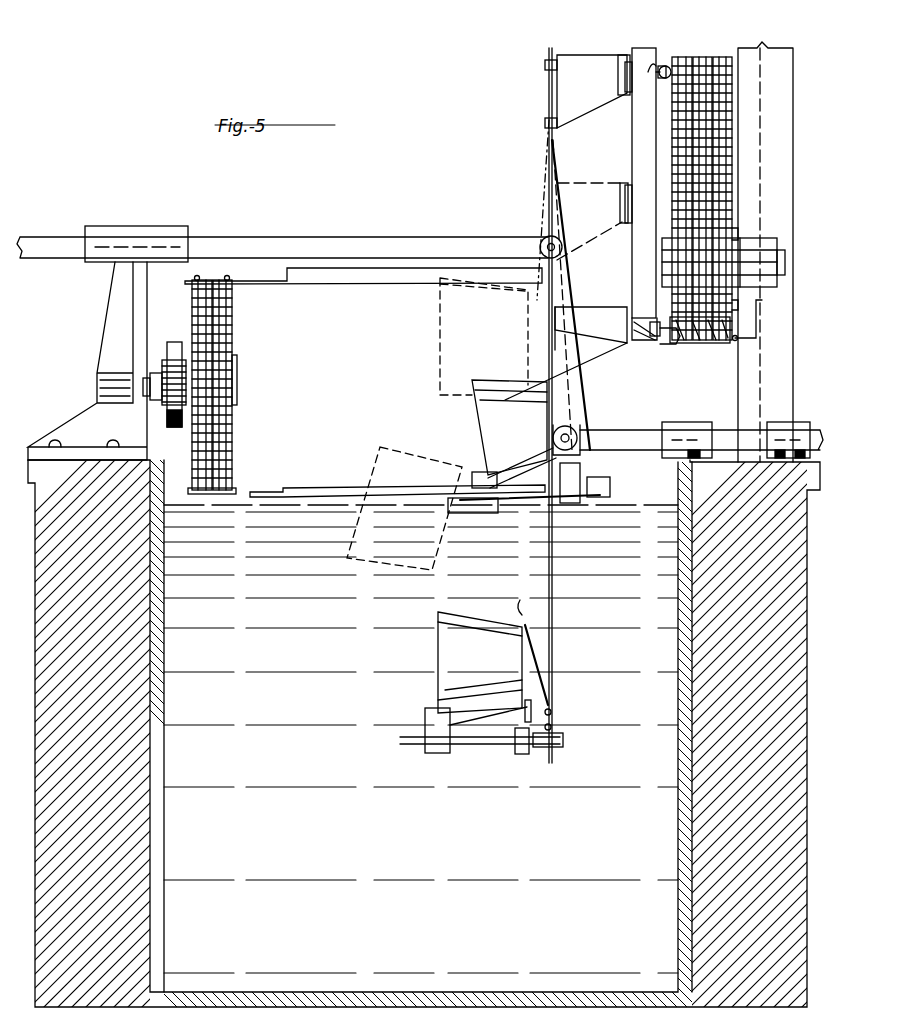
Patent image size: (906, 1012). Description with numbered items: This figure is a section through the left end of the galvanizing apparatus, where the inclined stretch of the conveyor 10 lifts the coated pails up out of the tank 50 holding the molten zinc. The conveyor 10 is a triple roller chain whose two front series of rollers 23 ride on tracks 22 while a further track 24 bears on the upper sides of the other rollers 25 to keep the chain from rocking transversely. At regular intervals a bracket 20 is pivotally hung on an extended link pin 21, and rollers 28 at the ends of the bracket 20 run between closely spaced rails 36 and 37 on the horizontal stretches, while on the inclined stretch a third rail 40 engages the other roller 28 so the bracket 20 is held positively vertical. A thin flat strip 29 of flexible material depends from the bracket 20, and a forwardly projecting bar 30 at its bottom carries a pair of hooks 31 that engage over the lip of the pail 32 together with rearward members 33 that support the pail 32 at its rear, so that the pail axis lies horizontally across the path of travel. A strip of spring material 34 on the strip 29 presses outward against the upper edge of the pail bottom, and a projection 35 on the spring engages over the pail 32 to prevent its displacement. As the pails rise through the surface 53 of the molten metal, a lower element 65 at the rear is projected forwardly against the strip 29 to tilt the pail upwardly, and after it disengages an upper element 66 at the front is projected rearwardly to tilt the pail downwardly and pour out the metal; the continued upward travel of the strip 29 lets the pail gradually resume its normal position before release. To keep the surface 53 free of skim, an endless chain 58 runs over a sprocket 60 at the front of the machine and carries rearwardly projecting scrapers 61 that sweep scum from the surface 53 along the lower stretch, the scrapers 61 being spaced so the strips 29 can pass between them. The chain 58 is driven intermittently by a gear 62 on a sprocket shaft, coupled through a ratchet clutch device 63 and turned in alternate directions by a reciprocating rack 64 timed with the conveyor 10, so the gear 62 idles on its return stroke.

The conveyor 10 is at (680, 116).
The bracket 20 is at (615, 95).
The extended link pin 21 is at (672, 70).
The track 22 is at (690, 345).
The roller 23 is at (700, 345).
The track 24 is at (735, 325).
The roller 25 is at (740, 345).
The roller 28 is at (660, 62).
The flat strip 29 is at (572, 286).
The bar 30 is at (487, 512).
The hook 31 is at (478, 472).
The pail 32 is at (440, 355).
The member 33 is at (592, 448).
The strip of spring material 34 is at (580, 412).
The projection 35 is at (529, 597).
The rail 36 is at (650, 345).
The rail 37 is at (632, 305).
The third rail 40 is at (640, 243).
The tank 50 is at (680, 817).
The molten metal surface 53 is at (255, 520).
The endless chain 58 is at (232, 356).
The sprocket 60 is at (233, 415).
The scraper 61 is at (348, 288).
The gear 62 is at (165, 428).
The clutch device 63 is at (165, 360).
The reciprocating rack 64 is at (176, 340).
The element 65 is at (626, 450).
The element 66 is at (483, 240).